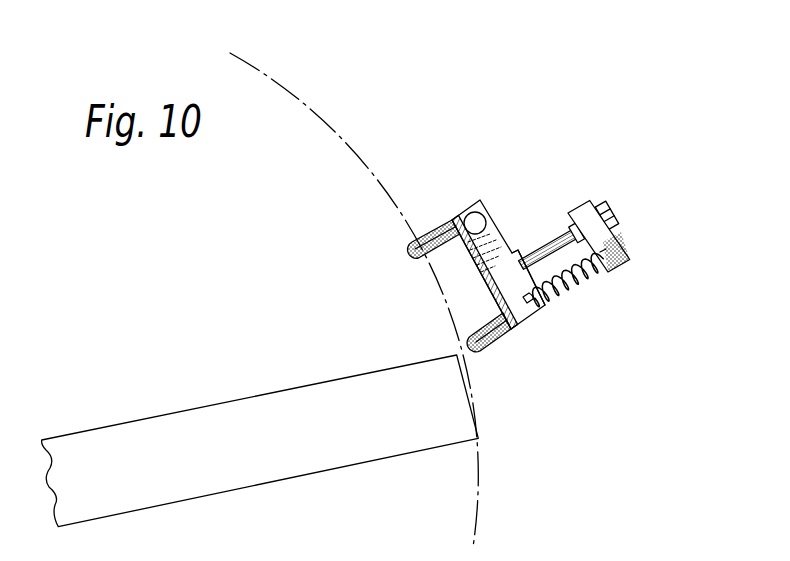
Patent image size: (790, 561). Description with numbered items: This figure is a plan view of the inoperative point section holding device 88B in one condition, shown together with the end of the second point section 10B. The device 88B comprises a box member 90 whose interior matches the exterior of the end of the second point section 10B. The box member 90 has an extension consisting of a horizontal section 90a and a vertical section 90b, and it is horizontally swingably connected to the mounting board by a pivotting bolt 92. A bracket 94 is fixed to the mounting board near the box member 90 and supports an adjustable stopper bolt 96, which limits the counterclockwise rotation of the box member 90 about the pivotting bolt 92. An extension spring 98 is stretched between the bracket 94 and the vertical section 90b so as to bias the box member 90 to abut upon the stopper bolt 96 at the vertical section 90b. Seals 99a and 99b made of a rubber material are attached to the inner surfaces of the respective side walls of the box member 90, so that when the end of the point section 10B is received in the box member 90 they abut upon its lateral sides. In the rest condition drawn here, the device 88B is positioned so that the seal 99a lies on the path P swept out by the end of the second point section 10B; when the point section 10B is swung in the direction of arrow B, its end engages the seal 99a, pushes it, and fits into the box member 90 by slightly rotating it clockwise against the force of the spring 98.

The second point section 10B is at (198, 402).
The inoperative point section holding device 88B is at (562, 156).
The box member 90 is at (430, 220).
The horizontal section 90a is at (521, 308).
The vertical section 90b is at (536, 303).
The pivotting bolt 92 is at (481, 203).
The bracket 94 is at (627, 262).
The adjustable stopper bolt 96 is at (540, 250).
The extension spring 98 is at (571, 284).
The seal 99a is at (412, 256).
The seal 99b is at (497, 344).
The direction of movement of the point section B is at (332, 332).
The path swept out by the end of the second point section P is at (481, 518).